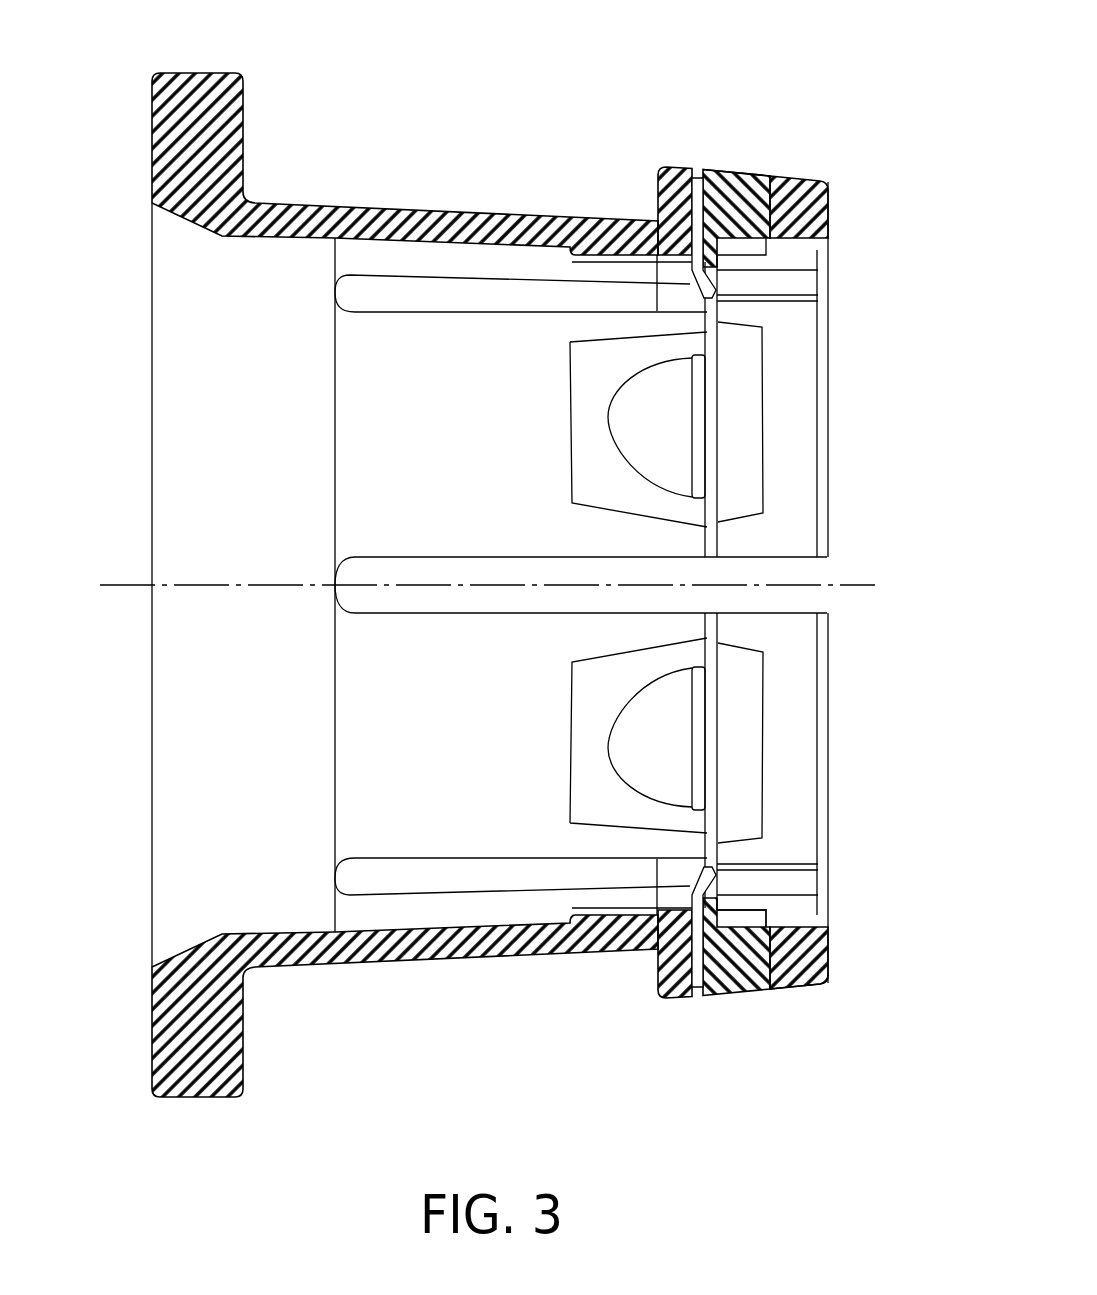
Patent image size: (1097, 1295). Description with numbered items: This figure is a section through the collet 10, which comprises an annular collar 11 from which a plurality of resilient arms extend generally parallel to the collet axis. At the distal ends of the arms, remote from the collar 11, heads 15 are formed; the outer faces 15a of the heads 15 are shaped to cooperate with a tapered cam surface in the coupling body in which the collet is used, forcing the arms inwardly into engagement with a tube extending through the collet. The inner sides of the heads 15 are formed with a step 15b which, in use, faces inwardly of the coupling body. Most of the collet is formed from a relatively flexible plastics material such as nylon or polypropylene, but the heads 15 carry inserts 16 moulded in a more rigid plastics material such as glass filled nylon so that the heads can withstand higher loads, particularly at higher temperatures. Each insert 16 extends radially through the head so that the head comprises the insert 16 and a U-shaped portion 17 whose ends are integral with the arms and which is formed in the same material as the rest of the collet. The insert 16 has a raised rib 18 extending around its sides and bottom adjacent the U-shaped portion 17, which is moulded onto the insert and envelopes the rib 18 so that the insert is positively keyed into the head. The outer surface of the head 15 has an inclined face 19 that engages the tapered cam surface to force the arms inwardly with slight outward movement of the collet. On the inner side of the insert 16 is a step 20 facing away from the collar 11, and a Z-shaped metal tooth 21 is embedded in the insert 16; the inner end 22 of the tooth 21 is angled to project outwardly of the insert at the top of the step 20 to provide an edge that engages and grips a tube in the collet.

The collet 10 is at (761, 57).
The annular collar 11 is at (306, 207).
The heads 15 is at (729, 572).
The outer faces 15a is at (813, 984).
The step 15b is at (727, 905).
The inserts 16 is at (655, 200).
The U-shaped portion 17 is at (793, 177).
The raised rib 18 is at (753, 165).
The inclined face 19 is at (822, 182).
The step 20 is at (758, 257).
The Z-shaped metal tooth 21 is at (657, 210).
The inner end 22 is at (780, 304).